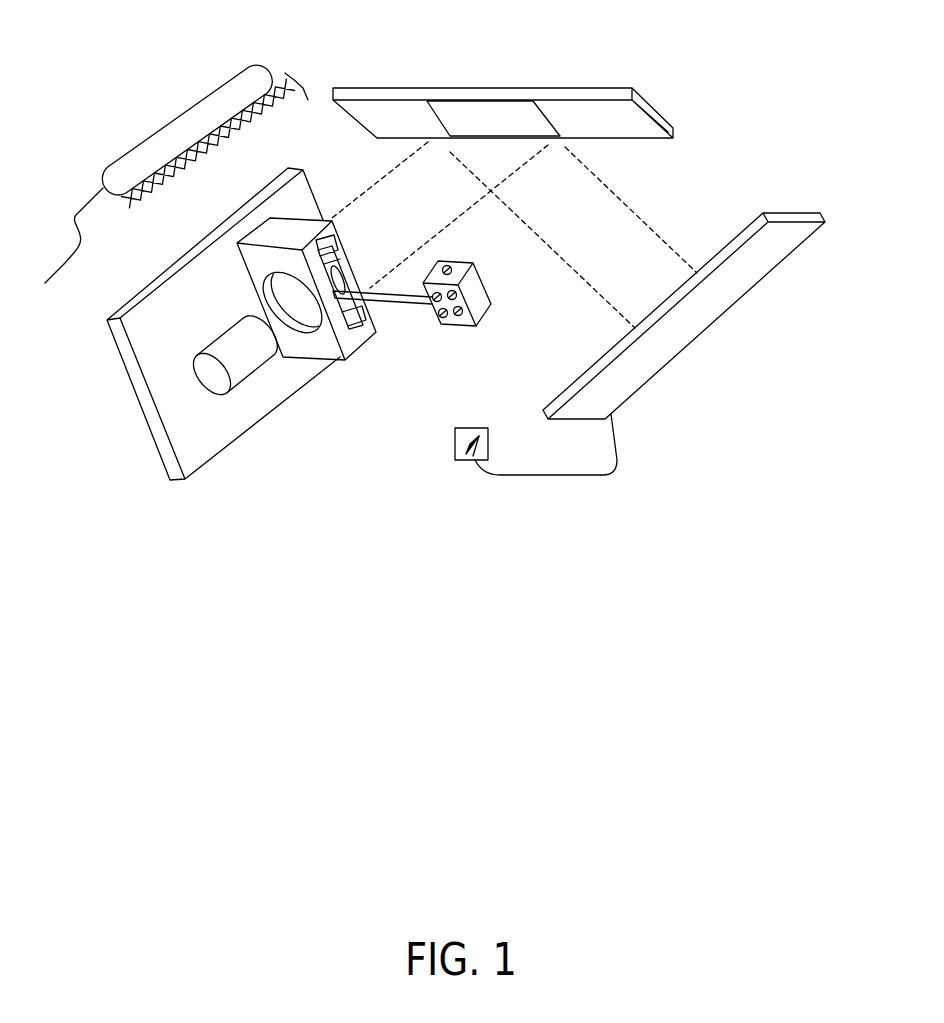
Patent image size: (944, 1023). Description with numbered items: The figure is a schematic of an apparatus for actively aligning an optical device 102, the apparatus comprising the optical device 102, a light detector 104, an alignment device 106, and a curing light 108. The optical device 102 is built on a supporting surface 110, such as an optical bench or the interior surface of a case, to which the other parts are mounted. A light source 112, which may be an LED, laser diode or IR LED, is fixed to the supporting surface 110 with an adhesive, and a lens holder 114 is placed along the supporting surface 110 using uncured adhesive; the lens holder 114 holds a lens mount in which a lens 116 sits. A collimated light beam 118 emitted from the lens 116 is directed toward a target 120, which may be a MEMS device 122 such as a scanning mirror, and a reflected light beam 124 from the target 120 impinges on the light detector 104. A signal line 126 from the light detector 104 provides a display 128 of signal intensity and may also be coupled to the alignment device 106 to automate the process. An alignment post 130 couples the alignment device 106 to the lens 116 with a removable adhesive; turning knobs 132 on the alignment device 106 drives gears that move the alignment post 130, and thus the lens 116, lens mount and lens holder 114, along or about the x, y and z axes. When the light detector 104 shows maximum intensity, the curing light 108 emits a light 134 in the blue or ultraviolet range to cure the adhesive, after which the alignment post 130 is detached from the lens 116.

The optical device 102 is at (122, 418).
The light detector 104 is at (770, 270).
The alignment device 106 is at (474, 276).
The curing light 108 is at (173, 118).
The supporting surface 110 is at (220, 457).
The light source 112 is at (237, 382).
The lens holder 114 is at (302, 361).
The lens 116 is at (340, 258).
The collimated light beam 118 is at (368, 187).
The target 120 is at (572, 88).
The MEMS device 122 is at (485, 100).
The reflected light beam 124 is at (632, 205).
The signal line 126 is at (553, 477).
The display 128 is at (473, 462).
The alignment post 130 is at (393, 303).
The knobs 132 is at (447, 264).
The light 134 is at (305, 88).